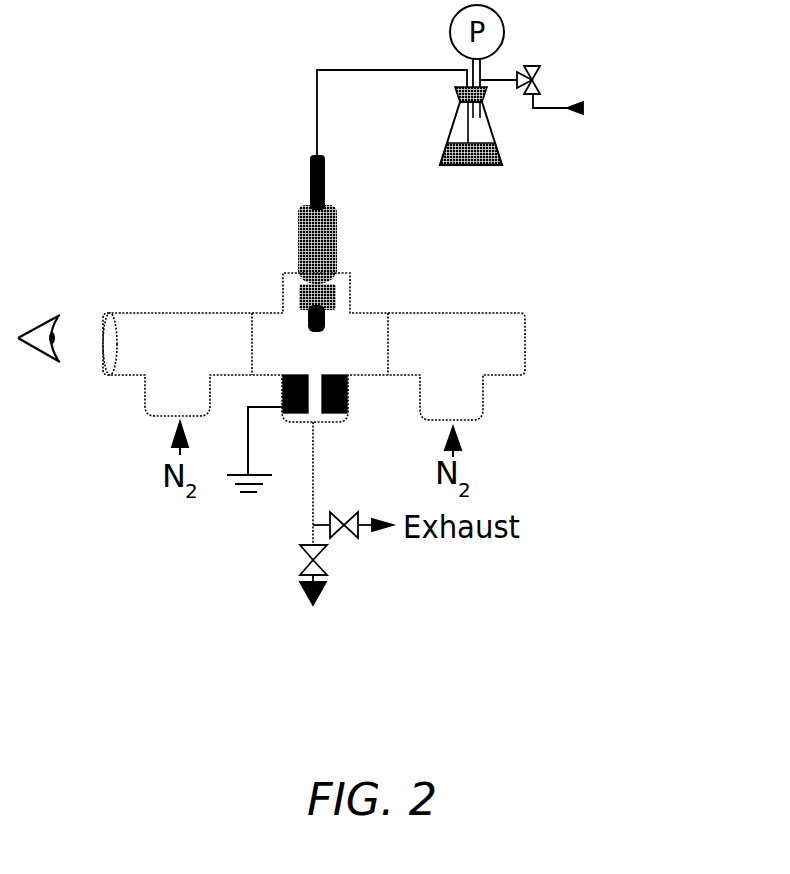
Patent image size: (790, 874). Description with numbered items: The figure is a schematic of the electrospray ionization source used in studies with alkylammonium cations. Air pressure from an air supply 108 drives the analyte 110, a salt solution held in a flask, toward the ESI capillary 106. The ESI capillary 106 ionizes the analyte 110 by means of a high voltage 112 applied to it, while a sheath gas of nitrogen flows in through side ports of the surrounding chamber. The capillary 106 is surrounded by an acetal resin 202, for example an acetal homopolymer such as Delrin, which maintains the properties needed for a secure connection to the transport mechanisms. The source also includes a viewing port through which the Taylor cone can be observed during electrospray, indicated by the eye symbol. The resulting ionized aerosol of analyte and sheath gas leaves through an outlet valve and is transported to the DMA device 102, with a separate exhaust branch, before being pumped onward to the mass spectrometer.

The DMA device 102 is at (303, 547).
The ESI capillary 106 is at (340, 193).
The air supply 108 is at (578, 124).
The analyte 110 is at (508, 168).
The high voltage 112 is at (310, 187).
The acetal resin 202 is at (280, 247).